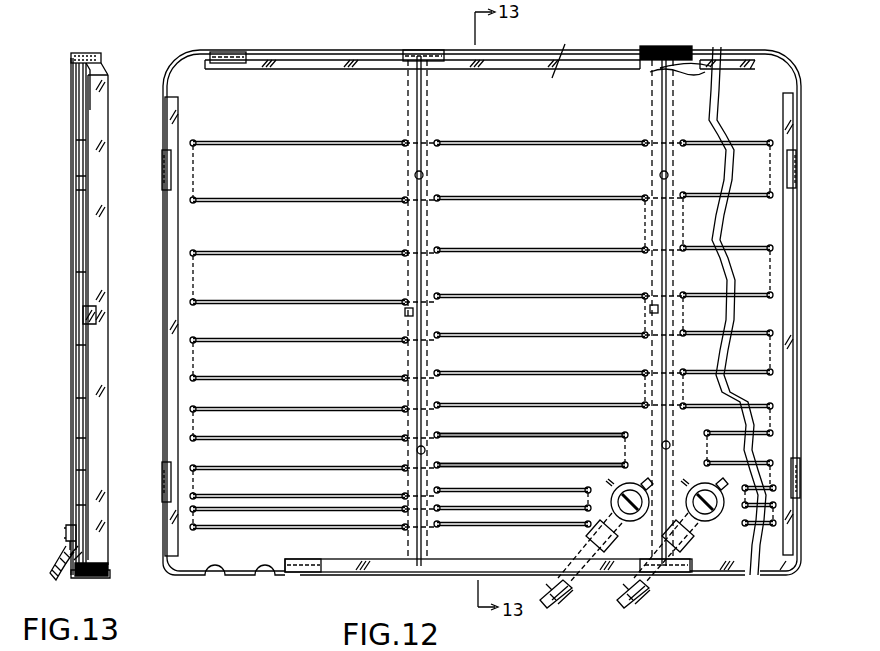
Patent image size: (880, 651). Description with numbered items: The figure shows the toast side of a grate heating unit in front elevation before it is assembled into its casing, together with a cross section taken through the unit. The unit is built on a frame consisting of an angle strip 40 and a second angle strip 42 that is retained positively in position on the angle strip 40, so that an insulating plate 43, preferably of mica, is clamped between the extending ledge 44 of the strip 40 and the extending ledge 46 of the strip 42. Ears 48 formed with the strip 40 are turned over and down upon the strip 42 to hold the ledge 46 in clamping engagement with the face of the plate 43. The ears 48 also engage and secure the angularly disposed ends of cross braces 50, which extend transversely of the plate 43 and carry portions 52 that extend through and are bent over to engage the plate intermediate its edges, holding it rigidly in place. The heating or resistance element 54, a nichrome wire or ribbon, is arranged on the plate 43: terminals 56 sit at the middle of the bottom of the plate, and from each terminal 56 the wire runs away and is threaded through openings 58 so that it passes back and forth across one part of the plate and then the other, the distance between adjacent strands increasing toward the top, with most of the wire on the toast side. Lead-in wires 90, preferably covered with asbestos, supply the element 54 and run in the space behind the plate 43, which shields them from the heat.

In FIG. 12, the angle strip 40 is at (307, 54).
In FIG. 13, the angle strip 40 is at (86, 53).
In FIG. 12, the second angle strip 42 is at (350, 64).
In FIG. 13, the second angle strip 42 is at (100, 62).
In FIG. 12, the insulating plate 43 is at (230, 584).
In FIG. 13, the insulating plate 43 is at (80, 214).
In FIG. 13, the extending ledge 44 is at (71, 66).
In FIG. 12, the extending ledge 46 is at (282, 66).
In FIG. 13, the extending ledge 46 is at (85, 68).
In FIG. 12, the ear 48 is at (232, 52).
In FIG. 12, the cross brace 50 is at (420, 117).
In FIG. 13, the cross brace 50 is at (104, 456).
In FIG. 13, the portion 52 is at (96, 316).
In FIG. 12, the heating or resistance element 54 is at (310, 302).
In FIG. 12, the terminal 56 is at (687, 511).
In FIG. 12, the opening 58 is at (440, 464).
In FIG. 12, the lead-in wire 90 is at (615, 600).